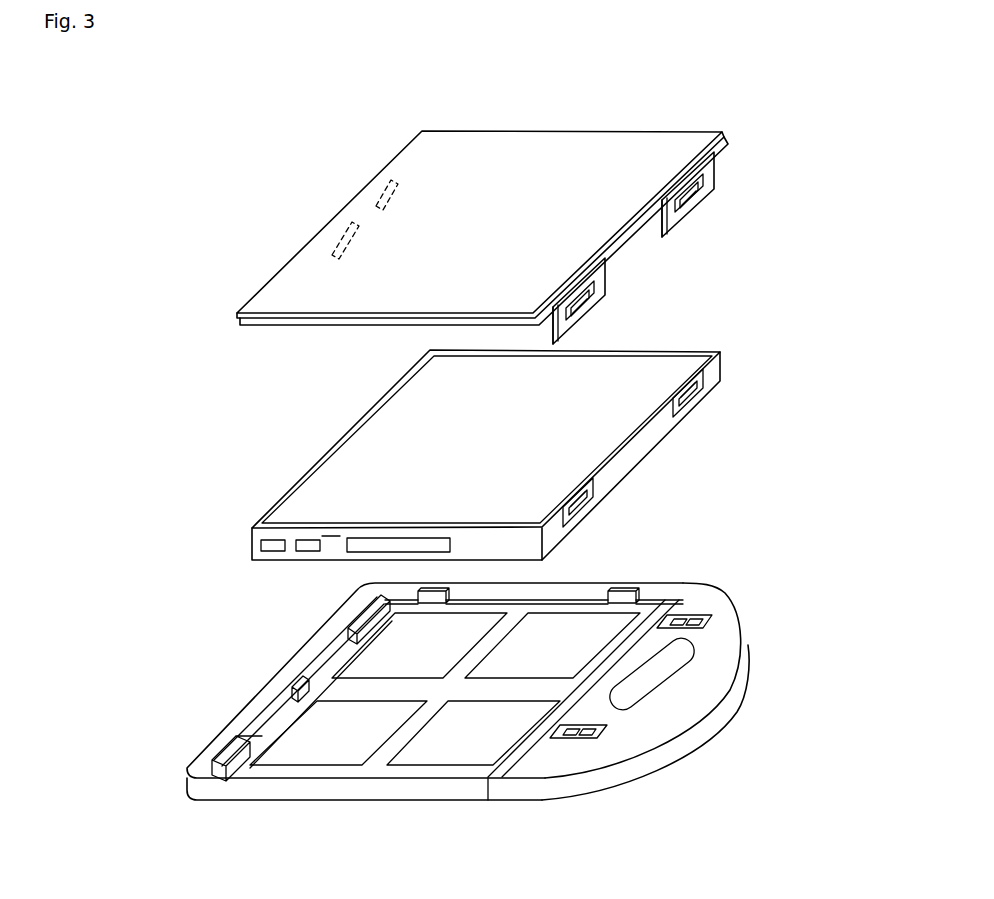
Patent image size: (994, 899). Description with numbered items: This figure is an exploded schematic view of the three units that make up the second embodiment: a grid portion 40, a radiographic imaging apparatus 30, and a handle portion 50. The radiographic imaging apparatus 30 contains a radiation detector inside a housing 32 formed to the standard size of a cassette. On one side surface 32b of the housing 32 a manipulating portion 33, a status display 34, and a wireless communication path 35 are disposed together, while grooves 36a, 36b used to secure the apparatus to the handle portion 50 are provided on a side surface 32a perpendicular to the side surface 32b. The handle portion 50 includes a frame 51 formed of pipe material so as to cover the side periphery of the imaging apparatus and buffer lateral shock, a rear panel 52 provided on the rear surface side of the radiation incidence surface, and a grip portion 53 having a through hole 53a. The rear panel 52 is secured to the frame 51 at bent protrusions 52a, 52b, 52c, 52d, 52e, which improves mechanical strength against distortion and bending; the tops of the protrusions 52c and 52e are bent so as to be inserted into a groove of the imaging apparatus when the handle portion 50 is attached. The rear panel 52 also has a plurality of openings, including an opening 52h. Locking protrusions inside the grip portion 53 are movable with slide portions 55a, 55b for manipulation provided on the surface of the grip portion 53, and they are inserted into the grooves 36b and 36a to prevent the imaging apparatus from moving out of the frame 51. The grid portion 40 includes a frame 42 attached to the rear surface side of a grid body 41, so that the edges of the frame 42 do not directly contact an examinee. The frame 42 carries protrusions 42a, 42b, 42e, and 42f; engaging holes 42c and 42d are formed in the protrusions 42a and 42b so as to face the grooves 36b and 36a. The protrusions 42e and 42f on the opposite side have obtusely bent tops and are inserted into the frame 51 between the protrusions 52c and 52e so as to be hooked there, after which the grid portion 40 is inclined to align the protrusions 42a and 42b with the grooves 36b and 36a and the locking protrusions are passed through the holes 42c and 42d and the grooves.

The grid portion 40 is at (742, 124).
The grid body 41 is at (508, 162).
The frame 42 is at (630, 233).
The protrusion 42a is at (715, 168).
The protrusion 42b is at (600, 283).
The engaging hole 42c is at (700, 192).
The engaging hole 42d is at (590, 300).
The protrusion 42e is at (383, 182).
The protrusion 42f is at (345, 232).
The radiographic imaging apparatus 30 is at (748, 347).
The housing 32 is at (652, 448).
The side surface 32a is at (613, 472).
The side surface 32b is at (333, 540).
The manipulating portion 33 is at (270, 542).
The status display 34 is at (308, 543).
The wireless communication path 35 is at (384, 543).
The groove 36a is at (588, 510).
The groove 36b is at (705, 393).
The handle portion 50 is at (757, 564).
The frame 51 is at (234, 793).
The rear panel 52 is at (377, 762).
The protrusion 52a is at (625, 598).
The protrusion 52b is at (430, 598).
The protrusion 52c is at (368, 610).
The protrusion 52d is at (300, 678).
The protrusion 52e is at (238, 730).
The opening 52h is at (296, 748).
The grip portion 53 is at (540, 762).
The through hole 53a is at (640, 698).
The slide portion 55a is at (708, 622).
The slide portion 55b is at (602, 733).